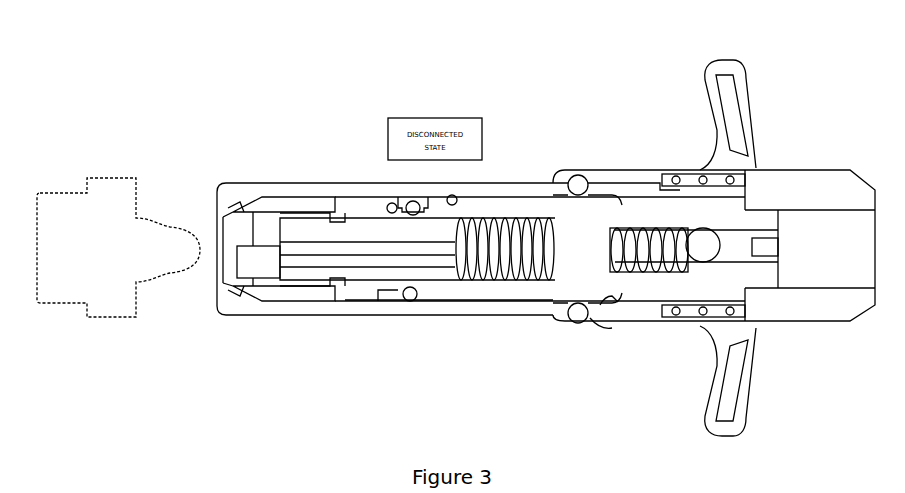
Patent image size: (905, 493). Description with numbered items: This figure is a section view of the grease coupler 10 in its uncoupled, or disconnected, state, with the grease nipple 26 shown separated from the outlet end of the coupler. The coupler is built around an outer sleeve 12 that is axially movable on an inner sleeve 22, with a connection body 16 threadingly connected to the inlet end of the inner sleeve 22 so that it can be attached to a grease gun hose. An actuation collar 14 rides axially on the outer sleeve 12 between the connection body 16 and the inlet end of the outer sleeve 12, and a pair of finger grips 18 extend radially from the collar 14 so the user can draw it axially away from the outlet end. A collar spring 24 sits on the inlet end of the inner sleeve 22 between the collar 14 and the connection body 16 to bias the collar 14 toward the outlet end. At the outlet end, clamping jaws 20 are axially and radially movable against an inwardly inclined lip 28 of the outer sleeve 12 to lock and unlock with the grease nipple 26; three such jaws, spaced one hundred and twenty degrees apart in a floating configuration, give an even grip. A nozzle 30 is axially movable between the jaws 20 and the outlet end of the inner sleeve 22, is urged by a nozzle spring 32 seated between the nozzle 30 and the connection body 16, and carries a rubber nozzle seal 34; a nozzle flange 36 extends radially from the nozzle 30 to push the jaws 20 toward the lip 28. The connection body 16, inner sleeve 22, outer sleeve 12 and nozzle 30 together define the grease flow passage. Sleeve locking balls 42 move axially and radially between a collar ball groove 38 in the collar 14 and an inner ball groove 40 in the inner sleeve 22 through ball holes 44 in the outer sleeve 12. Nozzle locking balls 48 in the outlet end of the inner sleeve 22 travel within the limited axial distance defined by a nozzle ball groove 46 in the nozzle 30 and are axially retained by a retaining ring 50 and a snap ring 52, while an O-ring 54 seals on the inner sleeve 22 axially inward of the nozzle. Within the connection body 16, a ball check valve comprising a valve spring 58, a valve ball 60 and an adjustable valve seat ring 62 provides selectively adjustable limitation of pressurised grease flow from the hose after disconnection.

The grease coupler 10 is at (828, 46).
The outer sleeve 12 is at (497, 186).
The actuation collar 14 is at (592, 172).
The connection body 16 is at (798, 322).
The finger grips 18 is at (738, 96).
The clamping jaws 20 is at (264, 196).
The inner sleeve 22 is at (492, 302).
The collar spring 24 is at (745, 178).
The grease nipple 26 is at (118, 247).
The inwardly inclined lip 28 is at (232, 210).
The nozzle 30 is at (367, 281).
The nozzle spring 32 is at (526, 278).
The rubber nozzle seal 34 is at (447, 270).
The nozzle flange 36 is at (350, 303).
The collar ball groove 38 is at (584, 330).
The inner ball groove 40 is at (610, 334).
The sleeve locking balls 42 is at (578, 300).
The ball holes 44 is at (578, 198).
The nozzle ball groove 46 is at (394, 288).
The nozzle locking balls 48 is at (410, 210).
The retaining ring 50 is at (416, 200).
The snap ring 52 is at (388, 206).
The O-ring 54 is at (454, 197).
The valve spring 58 is at (648, 238).
The valve ball 60 is at (703, 245).
The adjustable valve seat ring 62 is at (718, 262).